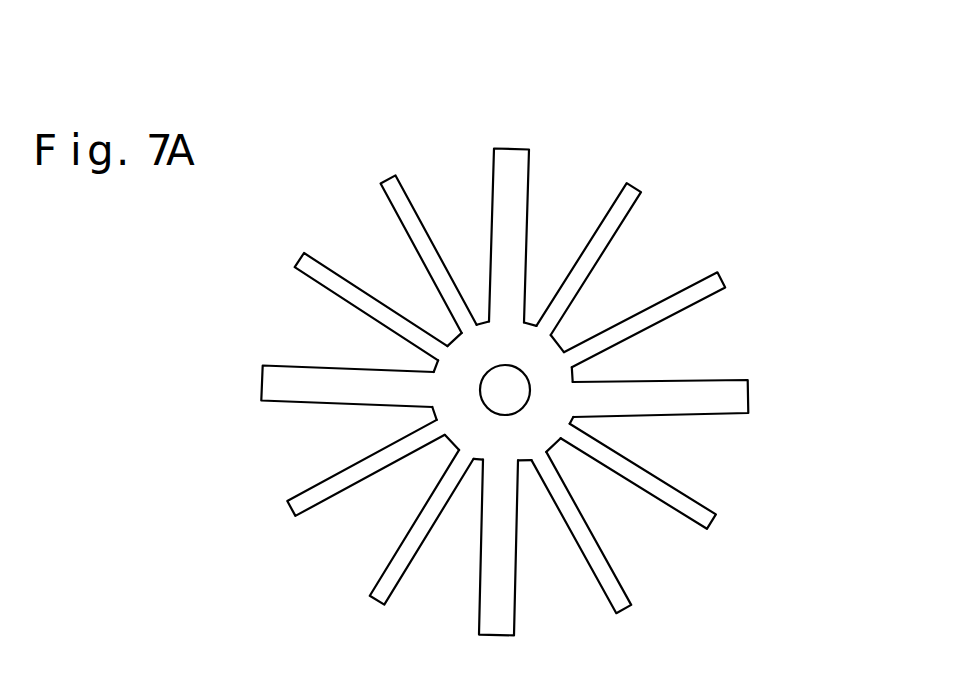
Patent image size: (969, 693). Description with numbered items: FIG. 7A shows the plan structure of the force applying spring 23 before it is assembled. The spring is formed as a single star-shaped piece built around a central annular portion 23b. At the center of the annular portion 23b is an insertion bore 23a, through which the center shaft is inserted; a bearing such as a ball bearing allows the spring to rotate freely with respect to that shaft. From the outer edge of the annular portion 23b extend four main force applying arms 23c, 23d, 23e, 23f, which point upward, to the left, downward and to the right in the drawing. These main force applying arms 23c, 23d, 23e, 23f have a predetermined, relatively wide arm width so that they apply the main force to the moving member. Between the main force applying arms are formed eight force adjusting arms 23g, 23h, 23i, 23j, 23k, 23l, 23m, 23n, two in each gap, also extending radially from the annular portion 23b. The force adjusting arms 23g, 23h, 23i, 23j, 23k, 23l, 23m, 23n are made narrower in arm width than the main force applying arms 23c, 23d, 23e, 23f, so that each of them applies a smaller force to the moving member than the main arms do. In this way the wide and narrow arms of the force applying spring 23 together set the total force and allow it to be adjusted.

The force applying spring 23 is at (763, 103).
The insertion bore 23a is at (512, 384).
The annular portion 23b is at (548, 352).
The main force applying arm 23c is at (509, 158).
The main force applying arm 23d is at (285, 383).
The main force applying arm 23e is at (498, 622).
The main force applying arm 23f is at (750, 398).
The force adjusting arm 23g is at (390, 182).
The force adjusting arm 23h is at (300, 262).
The force adjusting arm 23i is at (292, 507).
The force adjusting arm 23j is at (374, 601).
The force adjusting arm 23k is at (621, 610).
The force adjusting arm 23l is at (711, 520).
The force adjusting arm 23m is at (722, 279).
The force adjusting arm 23n is at (636, 187).